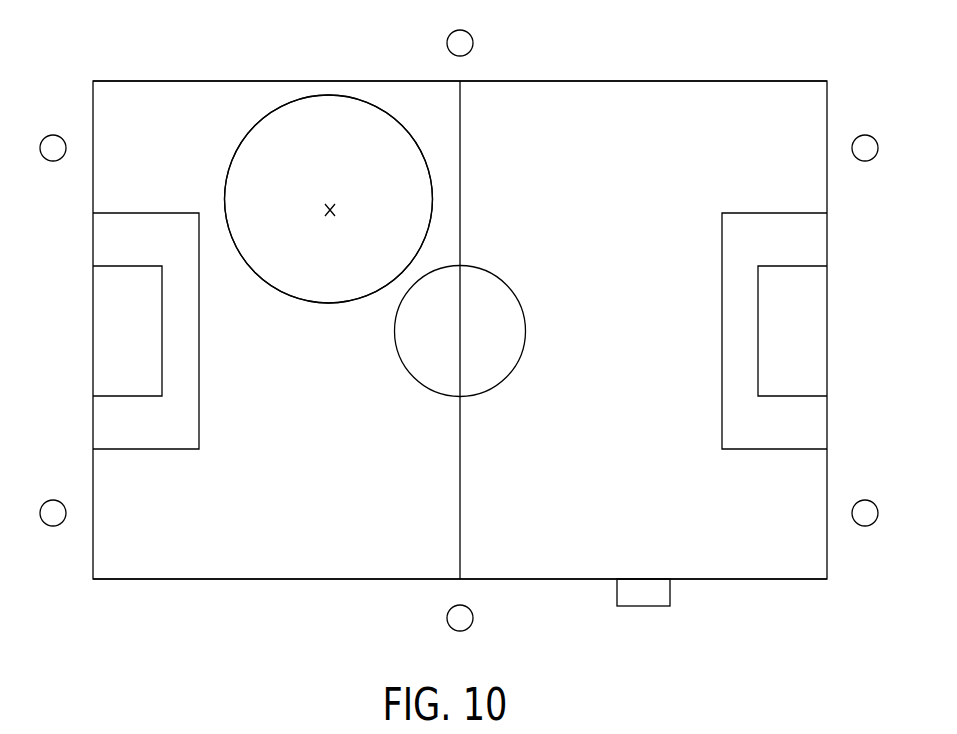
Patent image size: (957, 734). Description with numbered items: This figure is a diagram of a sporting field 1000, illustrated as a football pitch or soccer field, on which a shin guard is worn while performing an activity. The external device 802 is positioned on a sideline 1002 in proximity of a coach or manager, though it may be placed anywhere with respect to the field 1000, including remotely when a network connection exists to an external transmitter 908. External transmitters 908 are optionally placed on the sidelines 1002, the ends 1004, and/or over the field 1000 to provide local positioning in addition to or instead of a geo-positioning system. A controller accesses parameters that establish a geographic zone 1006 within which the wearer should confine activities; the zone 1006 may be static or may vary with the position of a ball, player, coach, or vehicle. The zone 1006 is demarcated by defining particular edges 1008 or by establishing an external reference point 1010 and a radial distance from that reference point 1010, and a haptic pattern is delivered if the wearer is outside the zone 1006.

The sporting field 1000 is at (173, 95).
The sideline 1002 is at (243, 580).
The end 1004 is at (712, 80).
The geographic zone 1006 is at (330, 103).
The edge 1008 is at (310, 302).
The external reference point 1010 is at (328, 198).
The external transmitter 908 is at (446, 42).
The external device 802 is at (635, 607).